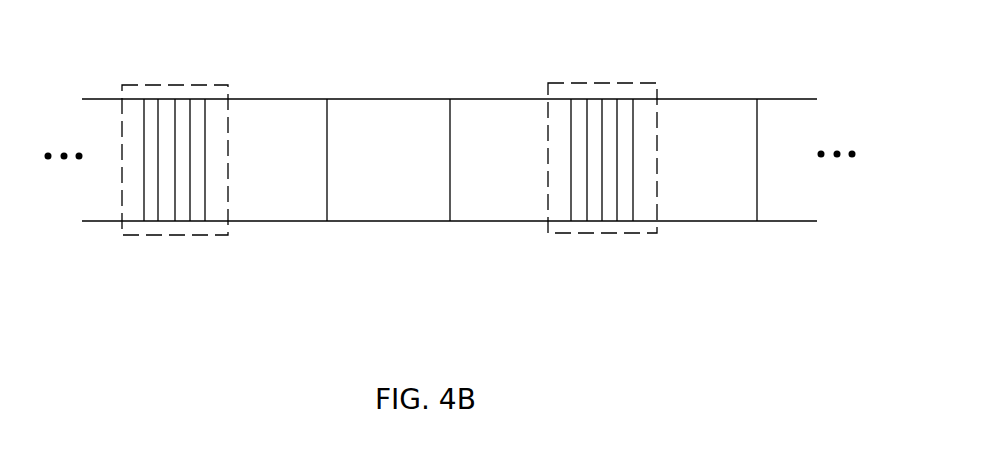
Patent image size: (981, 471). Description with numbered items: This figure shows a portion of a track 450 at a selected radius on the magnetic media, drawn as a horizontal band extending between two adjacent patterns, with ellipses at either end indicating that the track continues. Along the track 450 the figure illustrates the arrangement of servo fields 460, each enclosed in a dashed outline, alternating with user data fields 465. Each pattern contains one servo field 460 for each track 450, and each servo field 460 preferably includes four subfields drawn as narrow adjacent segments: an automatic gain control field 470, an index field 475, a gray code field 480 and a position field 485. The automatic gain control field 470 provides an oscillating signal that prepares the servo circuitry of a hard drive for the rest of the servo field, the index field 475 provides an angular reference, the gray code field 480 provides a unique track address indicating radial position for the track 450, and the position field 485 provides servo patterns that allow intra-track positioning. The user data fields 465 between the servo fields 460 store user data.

The track 450 is at (474, 32).
The servo field 460 is at (195, 85).
The user data field 465 is at (288, 97).
The automatic gain control field 470 is at (152, 221).
The index field 475 is at (167, 221).
The gray code field 480 is at (182, 221).
The position field 485 is at (197, 221).